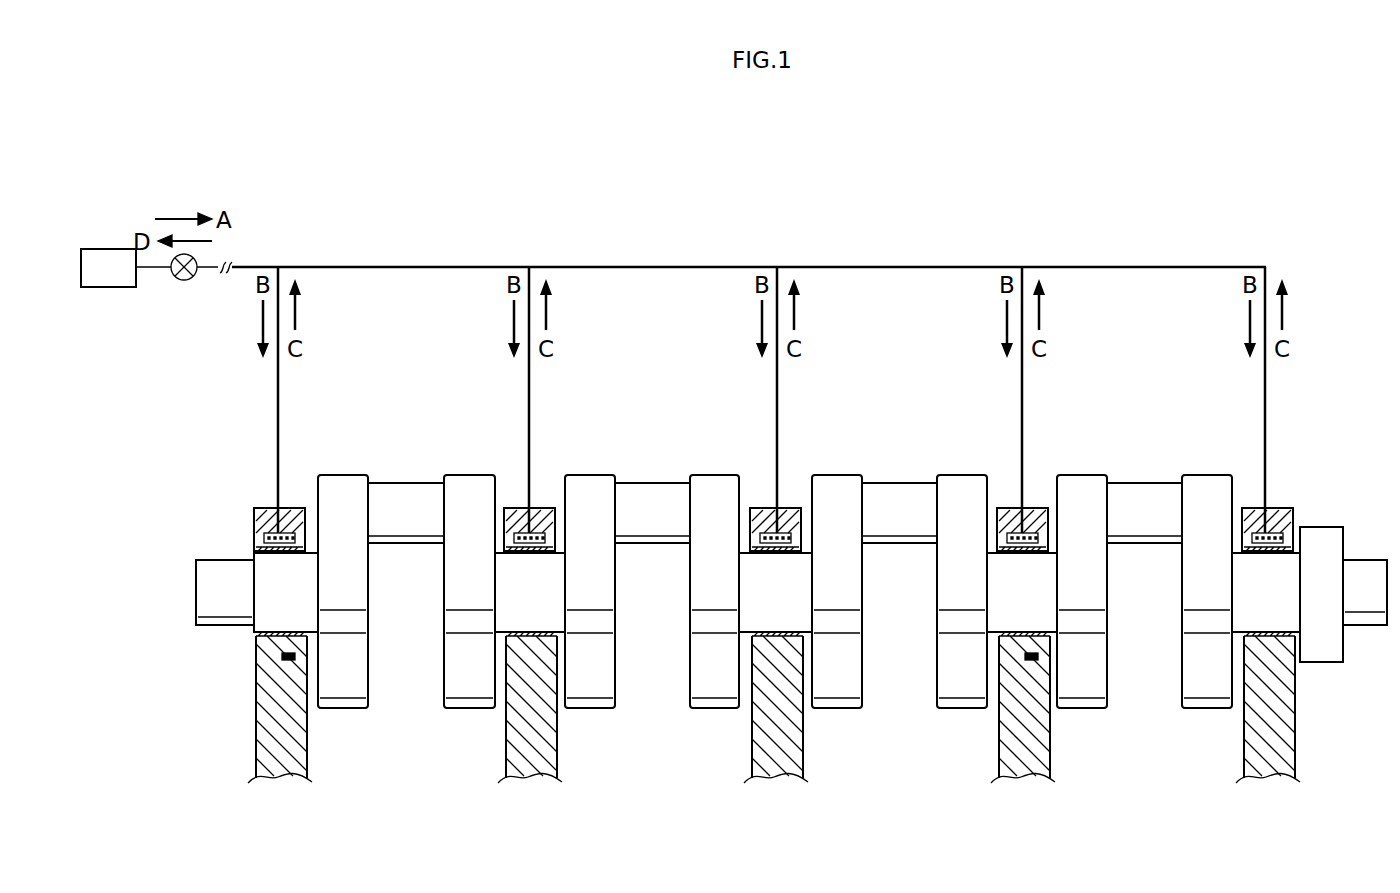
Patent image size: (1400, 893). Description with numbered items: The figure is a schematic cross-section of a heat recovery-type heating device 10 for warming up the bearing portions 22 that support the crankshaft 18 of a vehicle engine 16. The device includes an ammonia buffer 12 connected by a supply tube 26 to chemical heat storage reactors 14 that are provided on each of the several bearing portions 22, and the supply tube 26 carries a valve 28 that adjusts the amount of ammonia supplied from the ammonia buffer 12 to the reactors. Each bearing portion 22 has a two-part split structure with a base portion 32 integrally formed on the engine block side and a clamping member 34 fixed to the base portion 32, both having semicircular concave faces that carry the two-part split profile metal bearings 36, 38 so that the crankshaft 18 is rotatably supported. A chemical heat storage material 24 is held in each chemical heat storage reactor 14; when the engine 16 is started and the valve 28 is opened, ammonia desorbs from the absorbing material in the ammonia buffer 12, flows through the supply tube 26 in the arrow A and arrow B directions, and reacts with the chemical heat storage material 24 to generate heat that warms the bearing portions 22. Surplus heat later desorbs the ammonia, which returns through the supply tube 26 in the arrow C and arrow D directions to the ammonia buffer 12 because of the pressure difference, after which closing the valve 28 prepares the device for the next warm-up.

The heat recovery-type heating device 10 is at (673, 337).
The ammonia buffer 12 is at (112, 289).
The valve 28 is at (184, 281).
The supply tube 26 is at (690, 266).
The bearing portions 22 is at (272, 479).
The clamping member 34 is at (295, 495).
The chemical heat storage material 24 is at (723, 471).
The chemical heat storage reactors 14 is at (262, 537).
The metal bearing 38 is at (292, 556).
The metal bearing 36 is at (284, 630).
The base portion 32 is at (245, 737).
The vehicle engine 16 is at (791, 502).
The crankshaft 18 is at (720, 437).